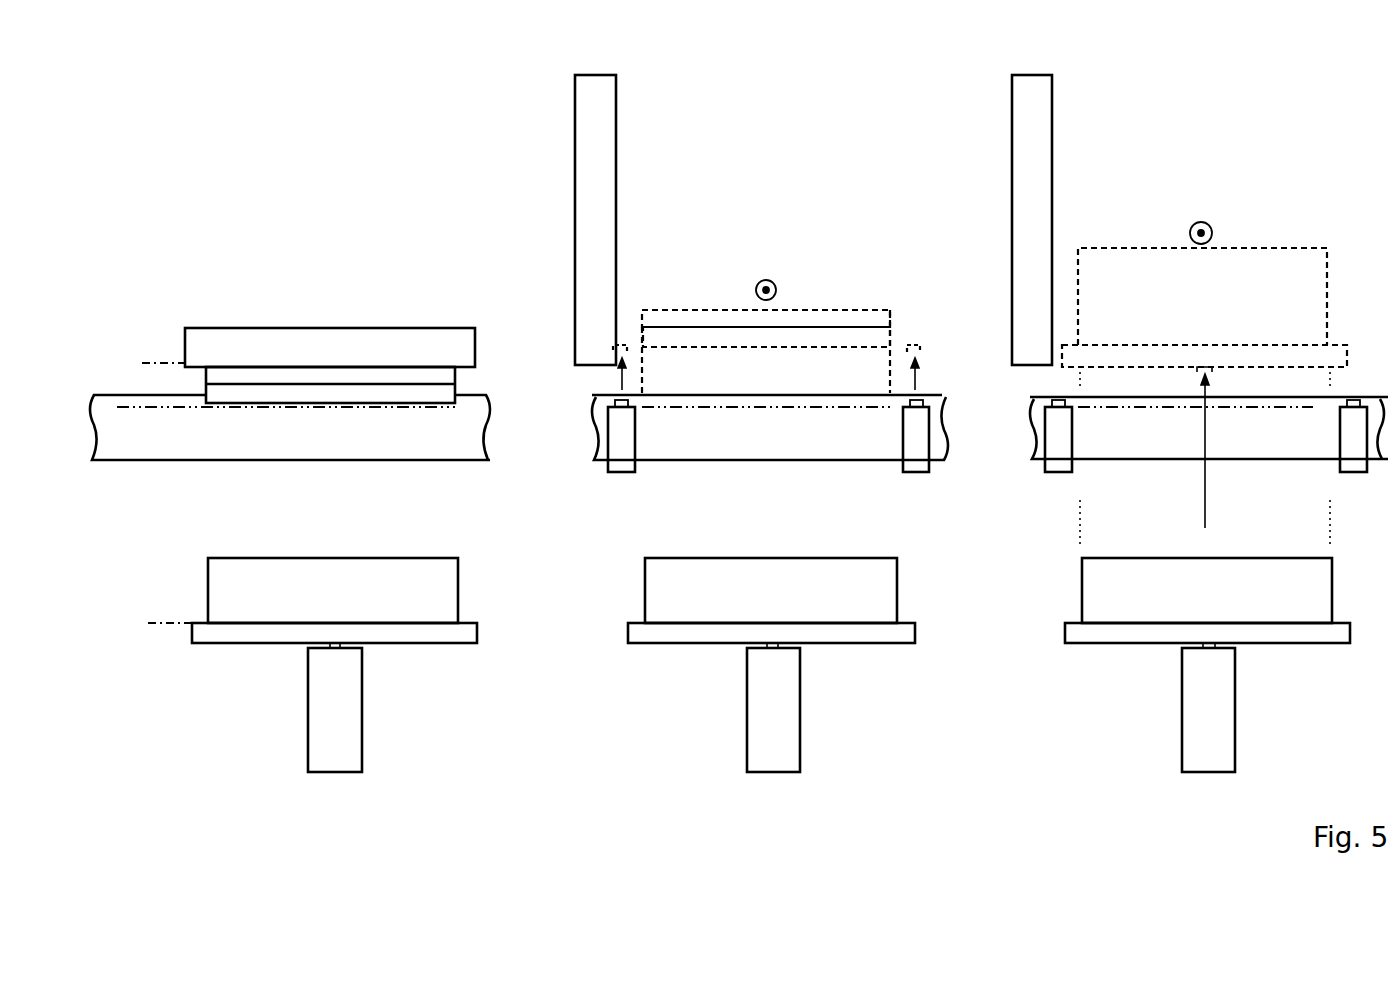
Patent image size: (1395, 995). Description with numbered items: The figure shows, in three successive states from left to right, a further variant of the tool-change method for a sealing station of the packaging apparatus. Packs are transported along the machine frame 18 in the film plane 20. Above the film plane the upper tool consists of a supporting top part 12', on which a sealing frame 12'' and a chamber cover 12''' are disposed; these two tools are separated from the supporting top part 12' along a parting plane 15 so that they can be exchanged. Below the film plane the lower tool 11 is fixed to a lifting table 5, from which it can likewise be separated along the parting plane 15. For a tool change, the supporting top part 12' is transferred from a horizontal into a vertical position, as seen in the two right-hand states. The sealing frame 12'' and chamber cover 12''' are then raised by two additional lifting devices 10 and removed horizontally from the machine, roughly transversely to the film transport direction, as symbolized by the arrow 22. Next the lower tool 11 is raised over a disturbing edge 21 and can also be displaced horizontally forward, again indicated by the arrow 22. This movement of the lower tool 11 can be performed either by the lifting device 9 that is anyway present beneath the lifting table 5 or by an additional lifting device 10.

The lifting table 5 is at (252, 633).
The lifting device 9 is at (322, 712).
The lifting device 10 is at (623, 460).
The lower tool 11 is at (452, 597).
The supporting top part 12' is at (658, 239).
The sealing frame 12'' is at (766, 275).
The chamber cover 12''' is at (774, 287).
The parting plane 15 is at (163, 362).
The machine frame 18 is at (297, 447).
The film plane 20 is at (128, 407).
The disturbing edge 21 is at (890, 326).
The arrow 22 is at (768, 280).